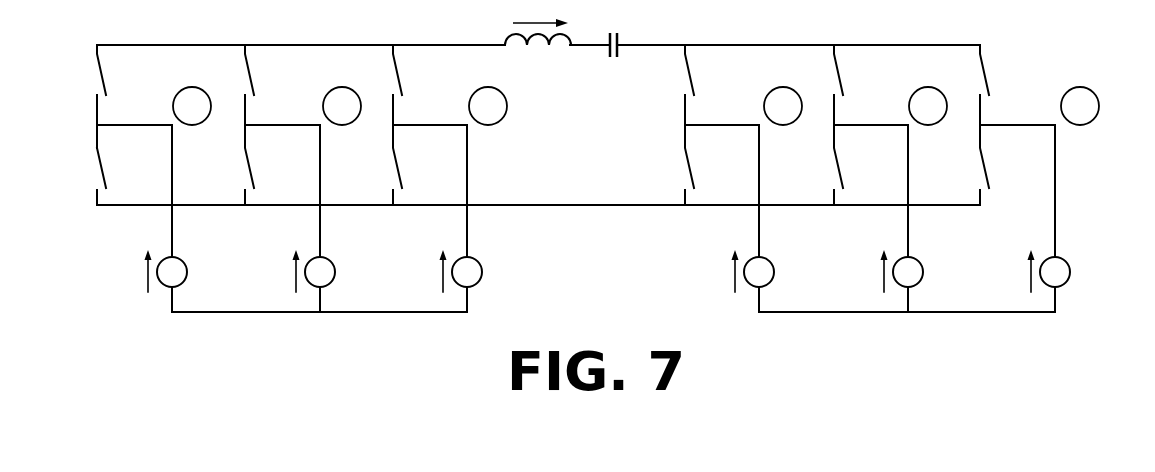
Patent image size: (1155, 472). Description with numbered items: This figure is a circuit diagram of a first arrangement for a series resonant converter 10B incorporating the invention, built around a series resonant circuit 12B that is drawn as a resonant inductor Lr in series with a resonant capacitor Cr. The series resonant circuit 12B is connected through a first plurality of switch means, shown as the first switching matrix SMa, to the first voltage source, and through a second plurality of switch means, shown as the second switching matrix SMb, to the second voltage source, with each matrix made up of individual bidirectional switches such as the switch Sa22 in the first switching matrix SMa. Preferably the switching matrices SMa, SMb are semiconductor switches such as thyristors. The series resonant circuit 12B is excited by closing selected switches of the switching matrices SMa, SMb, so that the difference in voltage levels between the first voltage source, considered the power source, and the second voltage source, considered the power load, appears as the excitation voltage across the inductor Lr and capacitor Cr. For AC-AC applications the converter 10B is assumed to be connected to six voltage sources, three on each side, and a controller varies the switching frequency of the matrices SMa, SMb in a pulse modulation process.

The series resonant converter 10B is at (611, 158).
The series resonant circuit 12B is at (574, 79).
The first switching matrix SMa is at (302, 158).
The second switching matrix SMb is at (1072, 30).
The bidirectional switch Sa22 is at (162, 176).
The resonant inductor Lr is at (538, 60).
The resonant capacitor Cr is at (611, 61).